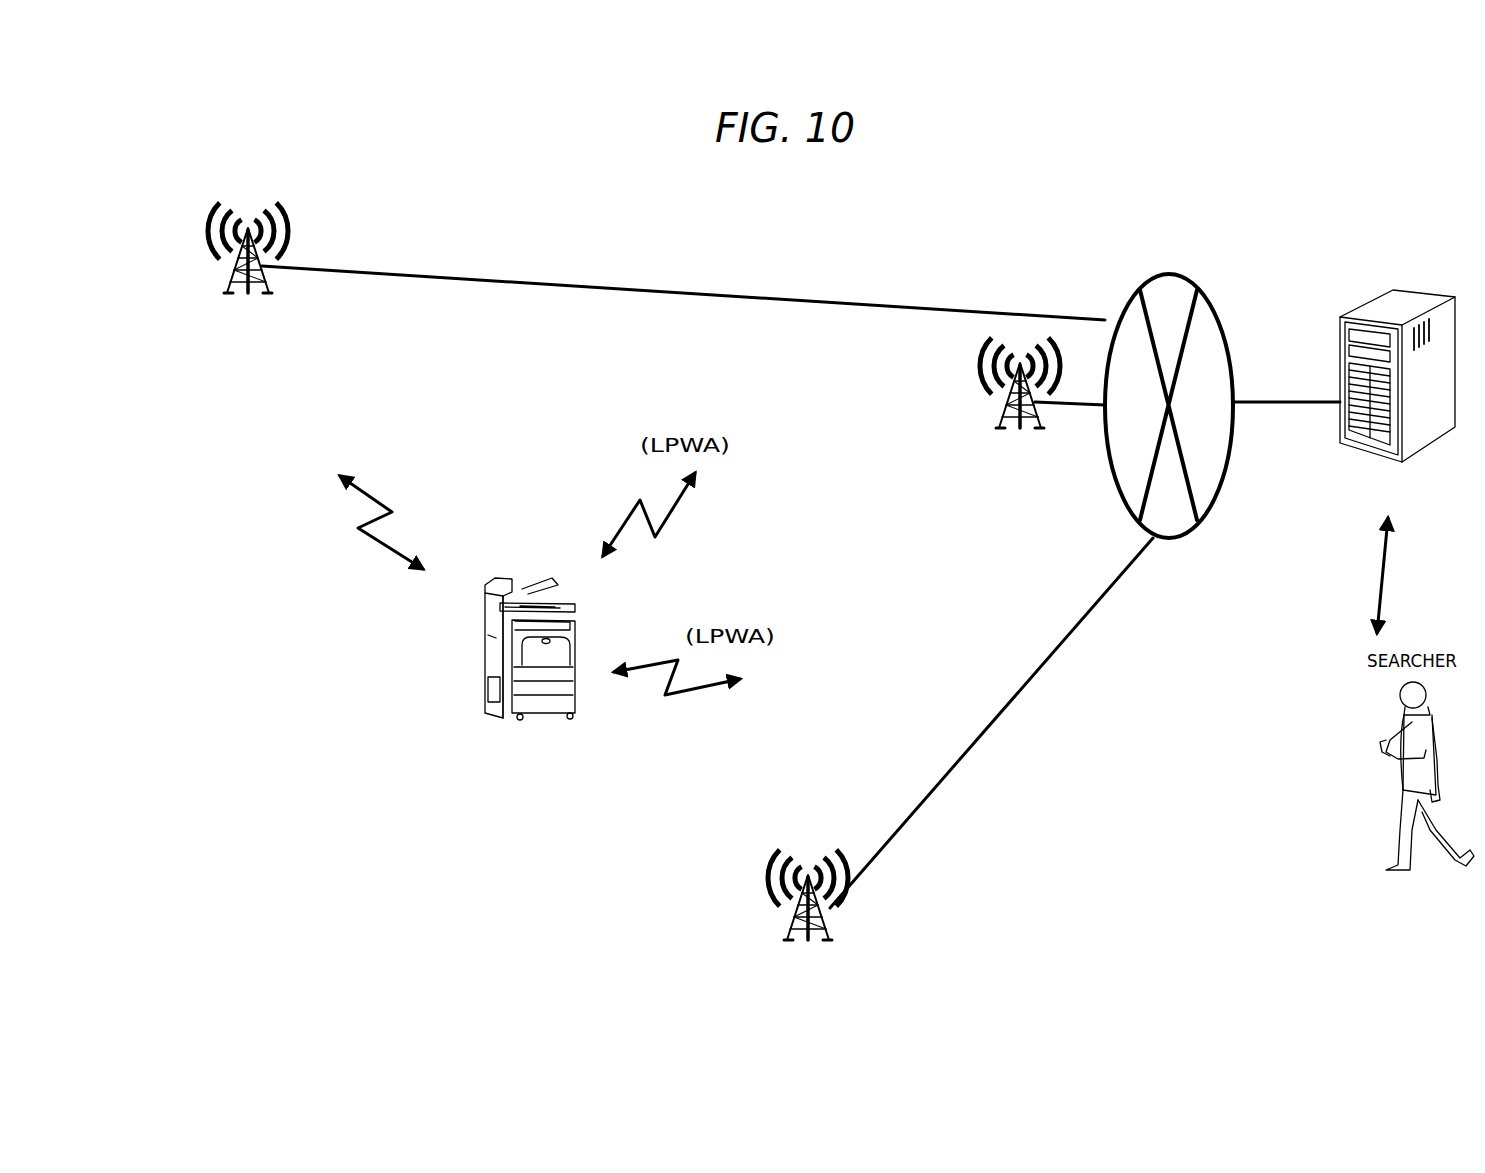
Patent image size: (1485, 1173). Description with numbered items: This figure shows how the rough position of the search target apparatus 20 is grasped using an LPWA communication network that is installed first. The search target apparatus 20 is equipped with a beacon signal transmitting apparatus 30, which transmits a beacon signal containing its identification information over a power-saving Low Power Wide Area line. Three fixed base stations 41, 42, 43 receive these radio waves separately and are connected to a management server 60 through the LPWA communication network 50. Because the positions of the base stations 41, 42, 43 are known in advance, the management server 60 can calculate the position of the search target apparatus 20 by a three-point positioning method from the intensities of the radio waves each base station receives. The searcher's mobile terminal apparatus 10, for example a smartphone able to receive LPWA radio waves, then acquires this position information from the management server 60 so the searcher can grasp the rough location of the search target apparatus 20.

The mobile terminal apparatus 10 is at (1383, 740).
The search target apparatus 20 is at (515, 596).
The beacon signal transmitting apparatus 30 is at (476, 752).
The base station 41 is at (790, 918).
The base station 42 is at (950, 383).
The base station 43 is at (192, 250).
The LPWA communication network 50 is at (1189, 359).
The management server 60 is at (1377, 315).